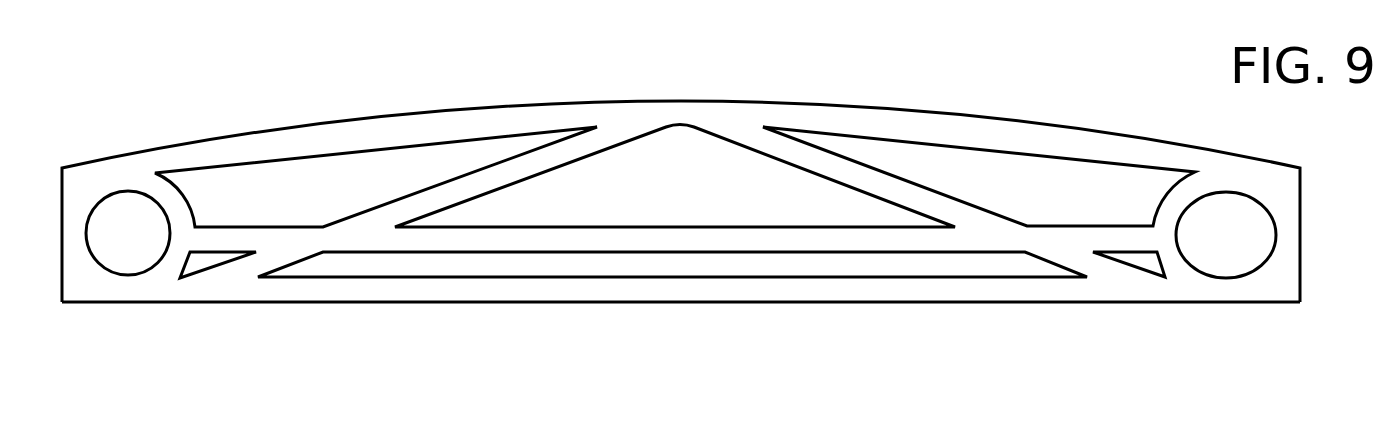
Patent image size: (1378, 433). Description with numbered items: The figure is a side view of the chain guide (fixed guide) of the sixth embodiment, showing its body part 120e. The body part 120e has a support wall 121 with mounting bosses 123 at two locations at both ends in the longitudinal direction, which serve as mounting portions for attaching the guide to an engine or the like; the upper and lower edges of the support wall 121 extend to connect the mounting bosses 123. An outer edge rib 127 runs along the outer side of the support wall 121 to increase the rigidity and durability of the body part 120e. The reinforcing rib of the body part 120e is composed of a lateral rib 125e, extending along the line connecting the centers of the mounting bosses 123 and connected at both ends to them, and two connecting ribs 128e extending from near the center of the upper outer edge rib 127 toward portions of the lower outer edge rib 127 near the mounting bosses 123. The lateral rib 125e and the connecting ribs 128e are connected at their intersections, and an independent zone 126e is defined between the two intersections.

The body part 120e is at (192, 122).
The support wall 121 is at (362, 180).
The mounting boss 123 is at (182, 243).
The lateral rib 125e is at (230, 237).
The independent zone 126e is at (613, 240).
The outer edge rib 127 is at (775, 287).
The connecting rib 128e is at (477, 187).